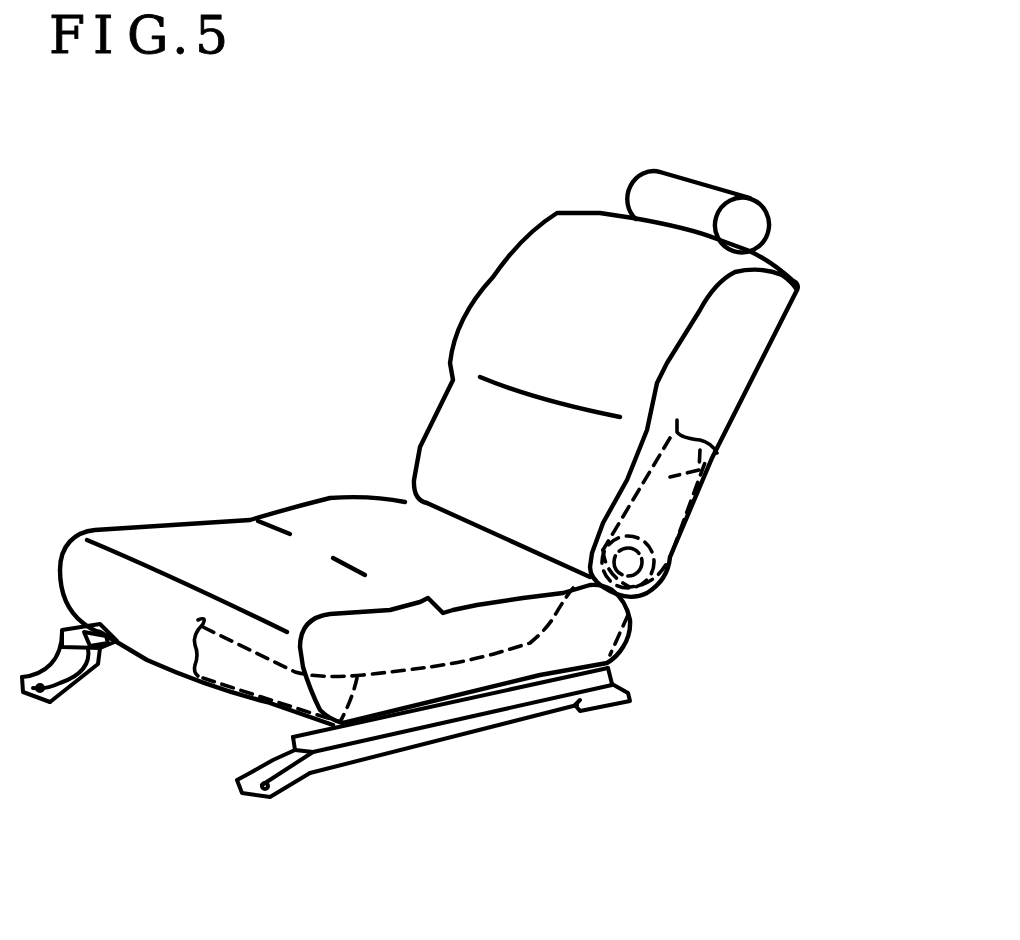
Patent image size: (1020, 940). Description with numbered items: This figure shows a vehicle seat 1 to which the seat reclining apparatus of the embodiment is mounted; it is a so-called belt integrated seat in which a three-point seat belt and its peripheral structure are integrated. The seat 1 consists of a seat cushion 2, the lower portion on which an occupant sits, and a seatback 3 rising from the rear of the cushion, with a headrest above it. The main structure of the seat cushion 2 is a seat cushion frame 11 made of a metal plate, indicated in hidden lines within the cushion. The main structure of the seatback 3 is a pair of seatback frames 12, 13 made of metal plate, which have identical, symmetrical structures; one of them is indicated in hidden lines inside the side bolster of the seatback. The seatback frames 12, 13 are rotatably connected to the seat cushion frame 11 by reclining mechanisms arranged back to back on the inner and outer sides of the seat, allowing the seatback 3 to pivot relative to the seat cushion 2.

The seat 1 is at (356, 226).
The seat cushion 2 is at (220, 545).
The seatback 3 is at (560, 240).
The seat cushion frame 11 is at (247, 675).
The seatback frame 12 is at (752, 523).
The seatback frame 13 is at (727, 463).